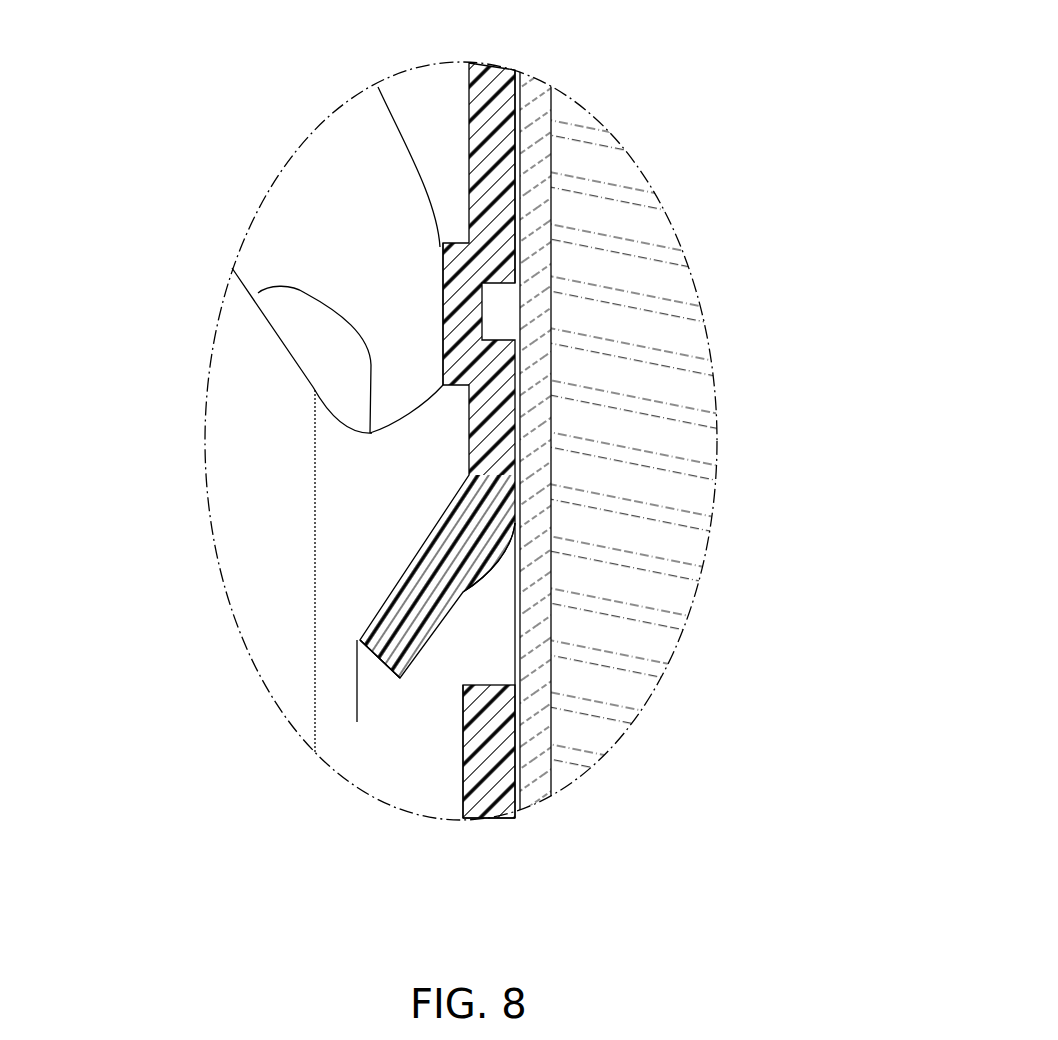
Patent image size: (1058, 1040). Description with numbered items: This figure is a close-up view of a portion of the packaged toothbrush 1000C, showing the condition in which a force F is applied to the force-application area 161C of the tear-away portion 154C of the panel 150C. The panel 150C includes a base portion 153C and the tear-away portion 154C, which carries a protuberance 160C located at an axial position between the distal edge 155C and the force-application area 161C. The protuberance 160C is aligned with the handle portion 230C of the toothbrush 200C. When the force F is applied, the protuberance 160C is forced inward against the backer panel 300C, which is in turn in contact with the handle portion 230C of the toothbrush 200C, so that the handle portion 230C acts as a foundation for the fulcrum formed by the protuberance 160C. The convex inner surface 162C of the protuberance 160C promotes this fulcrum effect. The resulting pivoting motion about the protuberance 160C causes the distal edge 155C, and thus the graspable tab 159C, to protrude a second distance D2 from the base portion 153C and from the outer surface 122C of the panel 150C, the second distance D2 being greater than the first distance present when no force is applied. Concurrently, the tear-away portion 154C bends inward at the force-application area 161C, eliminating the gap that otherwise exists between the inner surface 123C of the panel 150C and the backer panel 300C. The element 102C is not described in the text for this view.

The packaged toothbrush 1000C is at (208, 107).
The tear-away portion 154C is at (487, 394).
The inner surface 123C is at (545, 234).
The toothbrush 200C is at (722, 445).
The handle portion 230C is at (690, 447).
The protuberance 160C is at (487, 607).
The convex inner surface 162C is at (500, 595).
The force-application area 161C is at (460, 328).
The graspable tab 159C is at (398, 632).
The distal edge 155C is at (372, 678).
The outer surface 122C is at (440, 752).
The panel 150C is at (501, 780).
The base portion 153C is at (497, 723).
The base 102C is at (483, 803).
The backer panel 300C is at (540, 763).
The force F is at (425, 318).
The second distance D2 is at (441, 715).